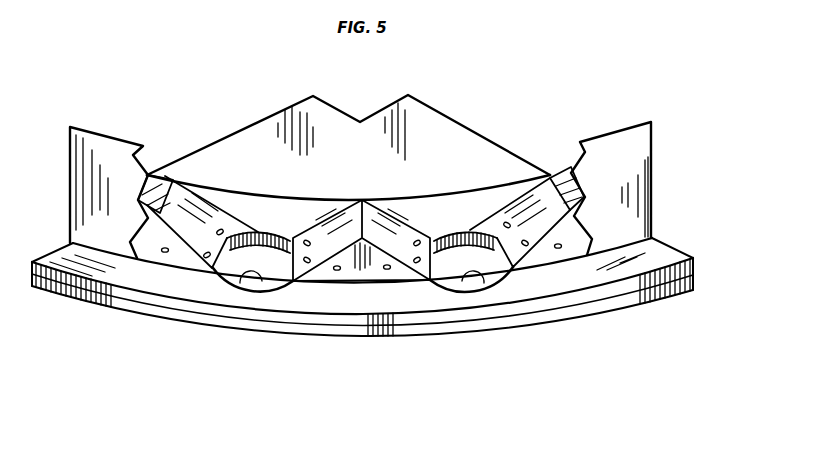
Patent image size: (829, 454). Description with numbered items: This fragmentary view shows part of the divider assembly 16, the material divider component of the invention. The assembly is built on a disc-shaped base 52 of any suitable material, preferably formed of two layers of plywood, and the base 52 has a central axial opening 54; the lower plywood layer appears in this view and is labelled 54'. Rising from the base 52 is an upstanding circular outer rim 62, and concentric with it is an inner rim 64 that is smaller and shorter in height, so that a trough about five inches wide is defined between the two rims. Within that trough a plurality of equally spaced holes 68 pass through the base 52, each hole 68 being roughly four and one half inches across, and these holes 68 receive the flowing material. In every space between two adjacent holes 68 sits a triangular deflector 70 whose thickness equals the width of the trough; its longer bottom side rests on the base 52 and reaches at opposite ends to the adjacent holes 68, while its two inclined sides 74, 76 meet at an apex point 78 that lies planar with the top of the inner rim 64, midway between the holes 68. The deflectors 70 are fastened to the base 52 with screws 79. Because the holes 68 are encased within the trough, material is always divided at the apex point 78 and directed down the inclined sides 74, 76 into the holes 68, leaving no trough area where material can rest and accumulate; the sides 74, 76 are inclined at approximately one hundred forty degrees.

The divider assembly 16 is at (250, 122).
The base 52 is at (427, 125).
The axial opening 54 is at (388, 281).
The base lower layer 54' is at (402, 300).
The outer rim 62 is at (93, 128).
The inner rim 64 is at (157, 173).
The holes 68 is at (246, 280).
The triangular deflector 70 is at (186, 282).
The deflector inclined side 74 is at (138, 200).
The deflector inclined side 76 is at (235, 213).
The apex point 78 is at (213, 192).
The screws 79 is at (165, 253).